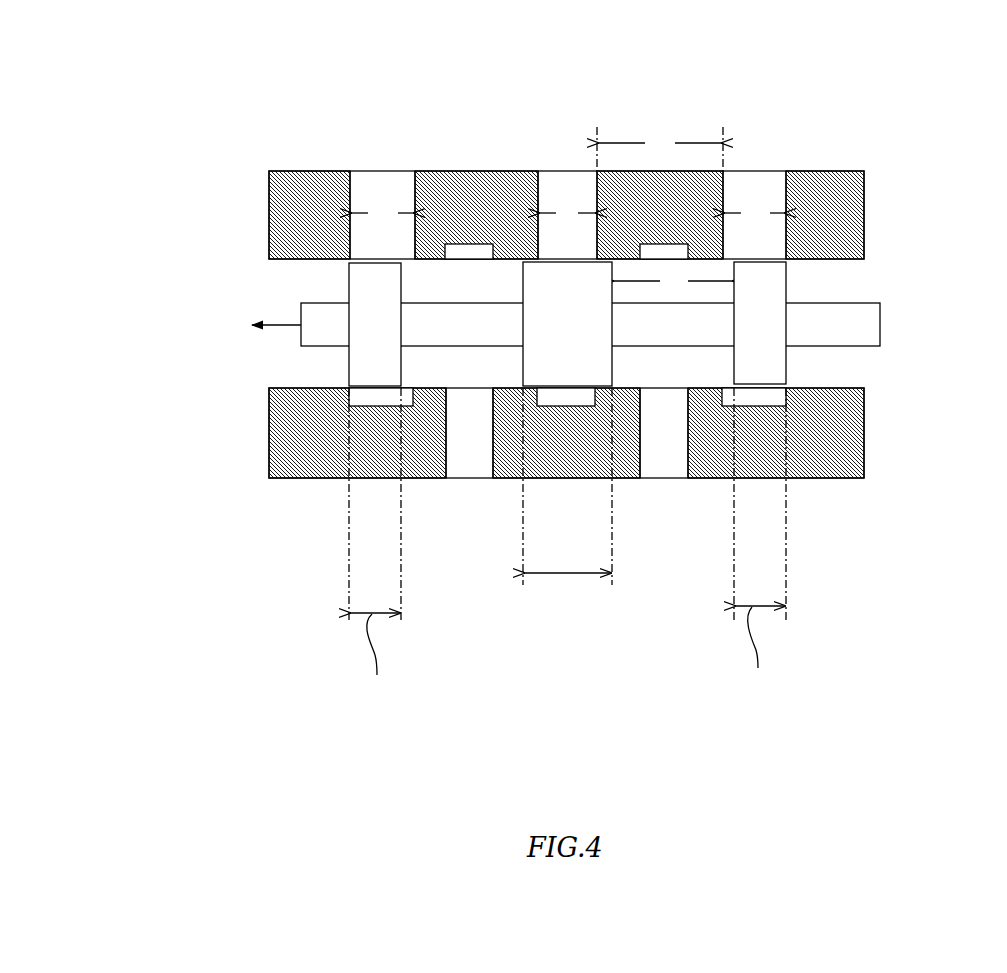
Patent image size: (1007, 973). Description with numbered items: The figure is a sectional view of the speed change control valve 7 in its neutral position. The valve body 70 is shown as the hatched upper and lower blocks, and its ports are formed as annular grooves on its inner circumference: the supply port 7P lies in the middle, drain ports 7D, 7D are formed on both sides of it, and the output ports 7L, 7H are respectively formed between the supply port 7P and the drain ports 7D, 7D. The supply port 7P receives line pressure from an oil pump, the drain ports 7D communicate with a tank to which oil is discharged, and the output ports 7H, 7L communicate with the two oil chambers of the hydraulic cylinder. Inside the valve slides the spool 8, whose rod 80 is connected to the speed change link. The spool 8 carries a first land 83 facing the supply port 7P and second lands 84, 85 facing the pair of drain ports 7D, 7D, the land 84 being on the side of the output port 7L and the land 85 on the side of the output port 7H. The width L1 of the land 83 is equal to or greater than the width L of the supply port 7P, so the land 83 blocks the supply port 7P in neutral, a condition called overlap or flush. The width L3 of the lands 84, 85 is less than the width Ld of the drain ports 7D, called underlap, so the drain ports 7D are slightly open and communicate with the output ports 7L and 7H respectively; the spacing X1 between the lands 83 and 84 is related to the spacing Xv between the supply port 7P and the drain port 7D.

The speed change control valve 7 is at (312, 138).
The valve body 70 is at (843, 166).
The drain port 7D is at (385, 171).
The supply port 7P is at (570, 170).
The output port 7H is at (469, 456).
The output port 7L is at (667, 456).
The spool 8 is at (278, 300).
The rod 80 is at (857, 331).
The land 83 is at (580, 362).
The land 84 is at (775, 362).
The land 85 is at (361, 358).